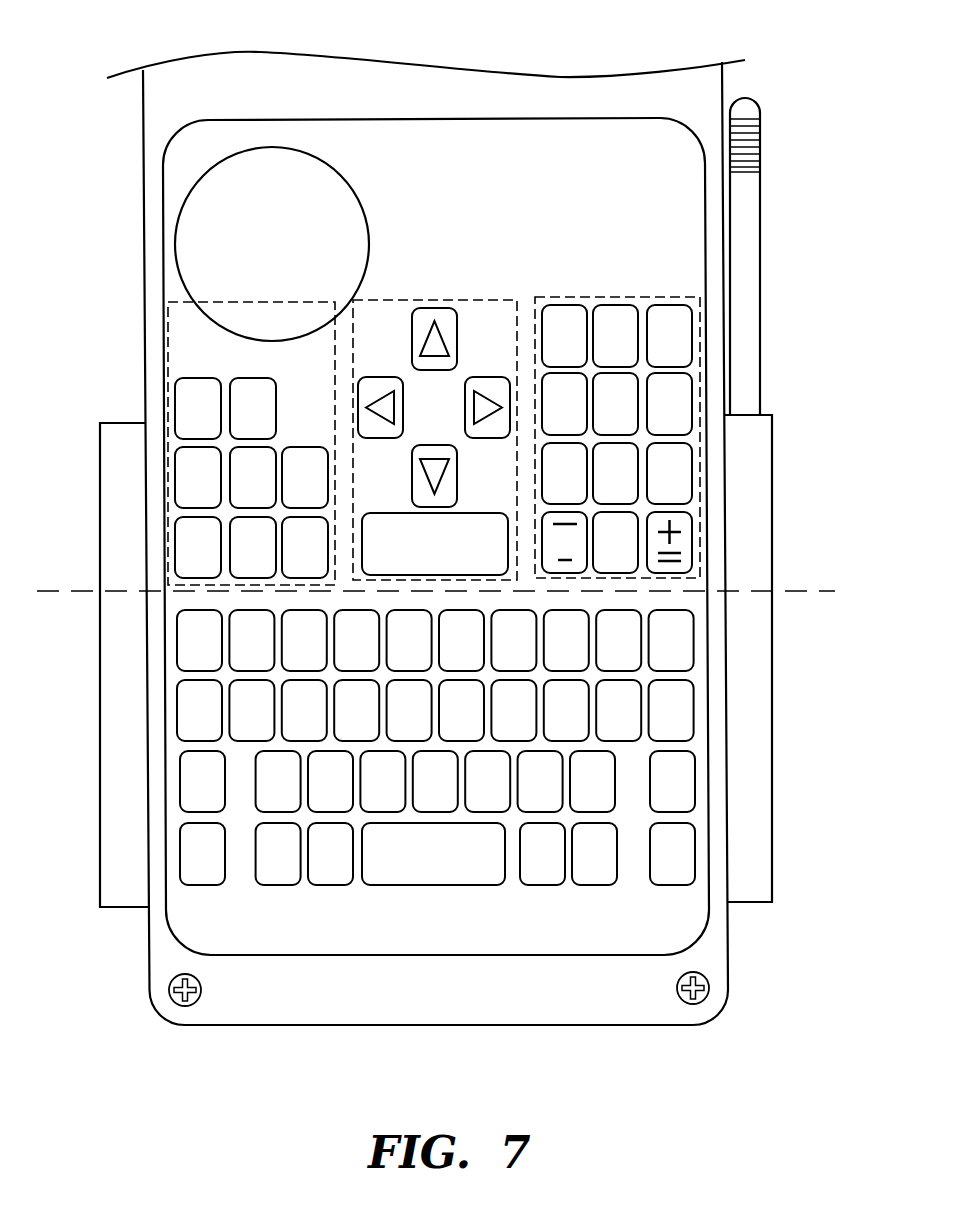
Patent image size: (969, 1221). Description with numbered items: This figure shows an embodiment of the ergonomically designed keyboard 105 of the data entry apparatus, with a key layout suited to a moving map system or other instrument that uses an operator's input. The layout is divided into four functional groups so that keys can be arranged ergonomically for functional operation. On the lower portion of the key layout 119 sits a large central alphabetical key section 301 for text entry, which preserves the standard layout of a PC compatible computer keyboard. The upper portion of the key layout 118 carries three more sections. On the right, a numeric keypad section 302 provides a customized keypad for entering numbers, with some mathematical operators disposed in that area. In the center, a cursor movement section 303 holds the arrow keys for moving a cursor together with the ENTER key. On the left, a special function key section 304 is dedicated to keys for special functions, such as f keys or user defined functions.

The ergonomically designed keyboard 105 is at (434, 147).
The upper portion of the key layout 118 is at (80, 566).
The lower portion of the key layout 119 is at (80, 651).
The alphabetical key section 301 is at (682, 643).
The numeric keypad section 302 is at (682, 387).
The cursor movement section 303 is at (457, 330).
The special function key section 304 is at (186, 391).